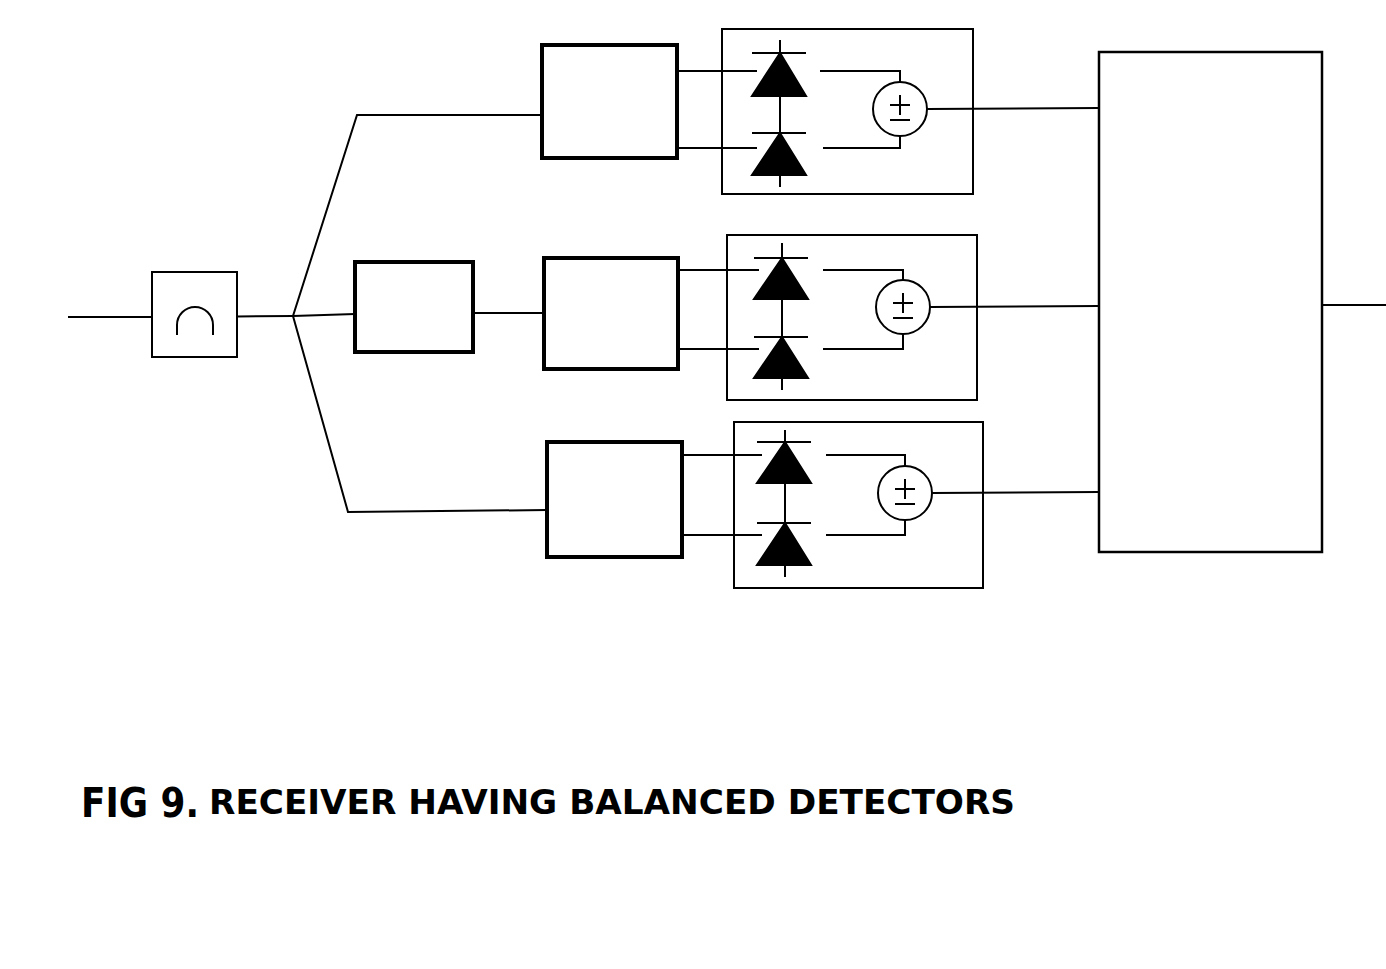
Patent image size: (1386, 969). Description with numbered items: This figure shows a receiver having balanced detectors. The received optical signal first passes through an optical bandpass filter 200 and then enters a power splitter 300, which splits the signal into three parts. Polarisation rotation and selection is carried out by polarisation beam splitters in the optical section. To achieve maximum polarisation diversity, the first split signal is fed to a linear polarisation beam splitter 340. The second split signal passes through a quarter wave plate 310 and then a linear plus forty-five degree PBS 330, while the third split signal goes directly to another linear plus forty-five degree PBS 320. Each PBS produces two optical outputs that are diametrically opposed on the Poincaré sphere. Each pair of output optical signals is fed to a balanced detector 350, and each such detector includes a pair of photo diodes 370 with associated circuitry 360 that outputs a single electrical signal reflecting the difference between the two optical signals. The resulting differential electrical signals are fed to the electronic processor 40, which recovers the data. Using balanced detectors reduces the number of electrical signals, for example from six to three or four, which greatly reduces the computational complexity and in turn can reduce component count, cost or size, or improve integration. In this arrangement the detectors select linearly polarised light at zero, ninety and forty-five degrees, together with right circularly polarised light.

The optical bandpass filter 200 is at (161, 230).
The power splitter 300 is at (274, 338).
The quarter wave plate 310 is at (449, 347).
The linear plus 45° PBS 320 is at (654, 534).
The linear plus 45° PBS 330 is at (651, 339).
The linear polarisation beam splitter 340 is at (643, 133).
The balanced detector 350 is at (887, 337).
The associated circuitry 360 is at (959, 310).
The photo diodes 370 is at (813, 311).
The electronic processor 40 is at (1242, 302).